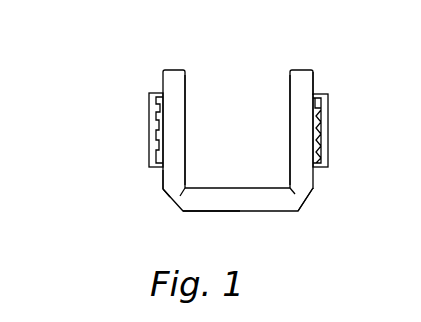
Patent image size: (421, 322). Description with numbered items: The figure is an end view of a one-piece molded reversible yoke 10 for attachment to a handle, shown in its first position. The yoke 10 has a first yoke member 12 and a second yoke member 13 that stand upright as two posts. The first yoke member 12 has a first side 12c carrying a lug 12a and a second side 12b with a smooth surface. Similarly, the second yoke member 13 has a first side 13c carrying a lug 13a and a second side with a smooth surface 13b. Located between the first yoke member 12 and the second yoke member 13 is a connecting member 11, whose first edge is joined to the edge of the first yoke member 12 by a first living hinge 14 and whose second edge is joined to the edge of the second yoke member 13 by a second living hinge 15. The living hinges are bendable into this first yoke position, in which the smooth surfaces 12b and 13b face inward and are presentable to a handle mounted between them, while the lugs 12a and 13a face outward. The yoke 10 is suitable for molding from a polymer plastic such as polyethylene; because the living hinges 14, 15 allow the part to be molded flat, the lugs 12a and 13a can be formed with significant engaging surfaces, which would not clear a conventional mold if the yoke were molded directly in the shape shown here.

The reversible yoke 10 is at (92, 92).
The connecting member 11 is at (257, 213).
The first yoke member 12 is at (173, 70).
The lug 12a is at (157, 93).
The second side 12b is at (186, 92).
The first side 12c is at (162, 182).
The second yoke member 13 is at (300, 70).
The lug 13a is at (329, 101).
The smooth surface 13b is at (290, 116).
The first side 13c is at (316, 72).
The first living hinge 14 is at (183, 214).
The second living hinge 15 is at (303, 189).